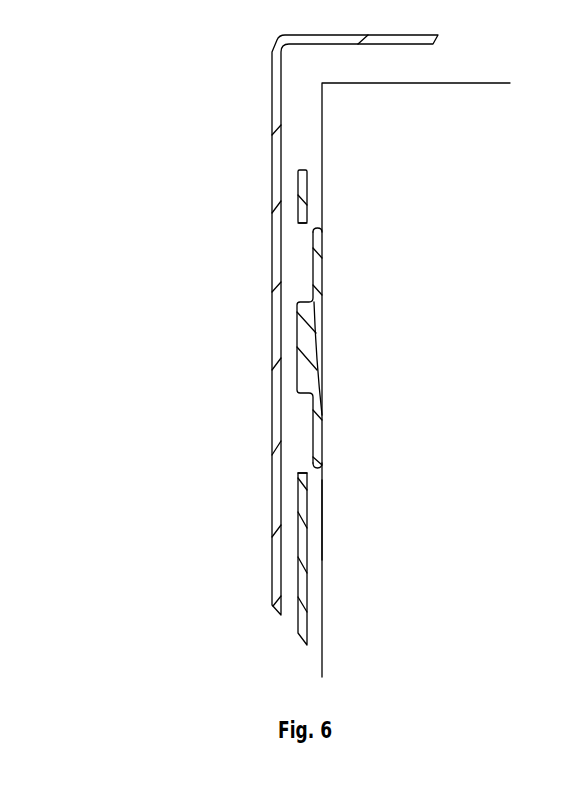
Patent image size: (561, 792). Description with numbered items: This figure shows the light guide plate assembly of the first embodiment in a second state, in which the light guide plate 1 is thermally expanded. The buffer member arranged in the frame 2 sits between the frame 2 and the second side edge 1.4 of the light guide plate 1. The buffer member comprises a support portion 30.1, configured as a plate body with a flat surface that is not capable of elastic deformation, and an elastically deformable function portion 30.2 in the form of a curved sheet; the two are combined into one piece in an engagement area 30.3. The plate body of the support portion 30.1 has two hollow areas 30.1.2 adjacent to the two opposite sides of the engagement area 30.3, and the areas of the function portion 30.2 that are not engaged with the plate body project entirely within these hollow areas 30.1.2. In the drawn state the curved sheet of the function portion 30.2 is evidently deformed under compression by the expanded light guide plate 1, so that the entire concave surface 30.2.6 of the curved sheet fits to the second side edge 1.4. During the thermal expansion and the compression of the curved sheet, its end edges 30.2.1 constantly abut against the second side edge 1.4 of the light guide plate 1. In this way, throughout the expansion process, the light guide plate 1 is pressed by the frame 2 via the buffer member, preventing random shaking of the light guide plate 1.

The light guide plate 1 is at (460, 588).
The second side edge 1.4 is at (322, 523).
The frame 2 is at (272, 145).
The support portion 30.1 is at (300, 177).
The hollow areas 30.1.2 is at (300, 257).
The function portion 30.2 is at (405, 282).
The end edges 30.2.1 is at (323, 228).
The concave surface 30.2.6 is at (322, 290).
The engagement area 30.3 is at (297, 348).